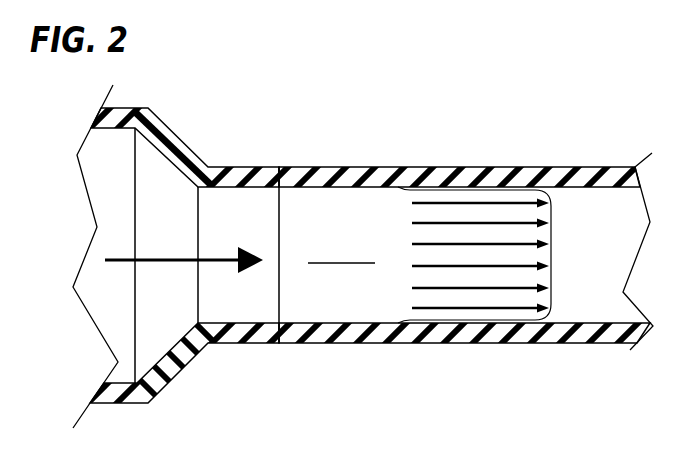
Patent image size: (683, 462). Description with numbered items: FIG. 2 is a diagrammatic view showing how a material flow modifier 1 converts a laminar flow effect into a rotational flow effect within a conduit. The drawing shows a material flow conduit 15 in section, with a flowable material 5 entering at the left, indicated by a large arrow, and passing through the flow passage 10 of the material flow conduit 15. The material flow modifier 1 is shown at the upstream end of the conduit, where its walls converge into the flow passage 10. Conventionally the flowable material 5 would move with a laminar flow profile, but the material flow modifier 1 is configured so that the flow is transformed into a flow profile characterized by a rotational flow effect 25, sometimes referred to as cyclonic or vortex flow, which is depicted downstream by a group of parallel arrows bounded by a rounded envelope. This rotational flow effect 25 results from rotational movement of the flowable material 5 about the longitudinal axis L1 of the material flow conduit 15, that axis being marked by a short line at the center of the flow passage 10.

The material flow modifier 1 is at (180, 142).
The flowable material 5 is at (158, 262).
The flow passage 10 is at (562, 203).
The material flow conduit 15 is at (326, 178).
The rotational flow effect 25 is at (552, 280).
The longitudinal axis L1 is at (347, 263).